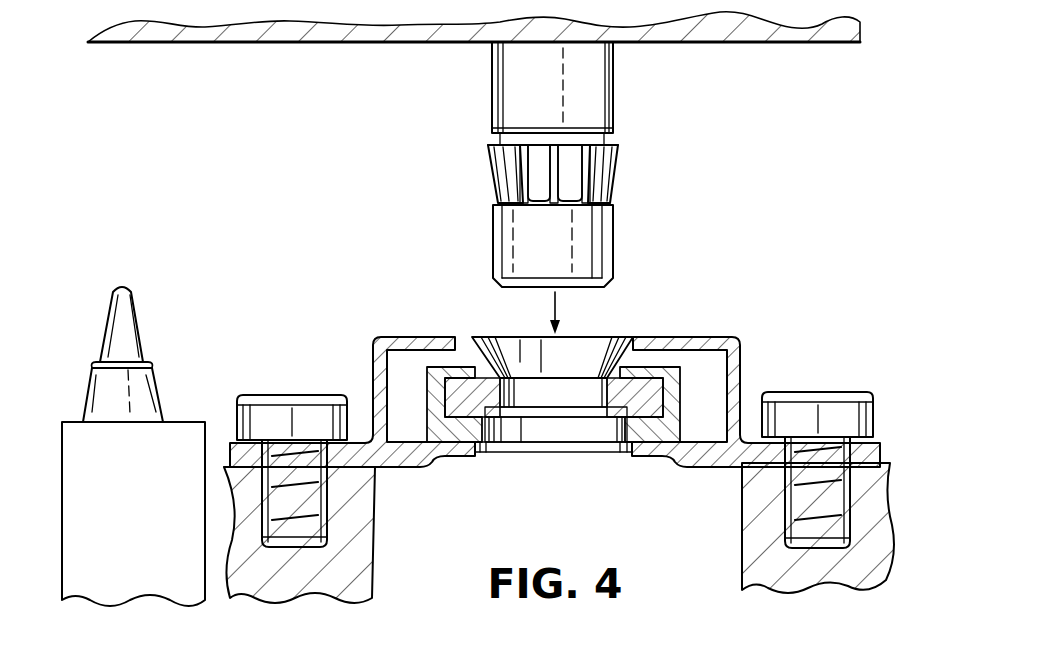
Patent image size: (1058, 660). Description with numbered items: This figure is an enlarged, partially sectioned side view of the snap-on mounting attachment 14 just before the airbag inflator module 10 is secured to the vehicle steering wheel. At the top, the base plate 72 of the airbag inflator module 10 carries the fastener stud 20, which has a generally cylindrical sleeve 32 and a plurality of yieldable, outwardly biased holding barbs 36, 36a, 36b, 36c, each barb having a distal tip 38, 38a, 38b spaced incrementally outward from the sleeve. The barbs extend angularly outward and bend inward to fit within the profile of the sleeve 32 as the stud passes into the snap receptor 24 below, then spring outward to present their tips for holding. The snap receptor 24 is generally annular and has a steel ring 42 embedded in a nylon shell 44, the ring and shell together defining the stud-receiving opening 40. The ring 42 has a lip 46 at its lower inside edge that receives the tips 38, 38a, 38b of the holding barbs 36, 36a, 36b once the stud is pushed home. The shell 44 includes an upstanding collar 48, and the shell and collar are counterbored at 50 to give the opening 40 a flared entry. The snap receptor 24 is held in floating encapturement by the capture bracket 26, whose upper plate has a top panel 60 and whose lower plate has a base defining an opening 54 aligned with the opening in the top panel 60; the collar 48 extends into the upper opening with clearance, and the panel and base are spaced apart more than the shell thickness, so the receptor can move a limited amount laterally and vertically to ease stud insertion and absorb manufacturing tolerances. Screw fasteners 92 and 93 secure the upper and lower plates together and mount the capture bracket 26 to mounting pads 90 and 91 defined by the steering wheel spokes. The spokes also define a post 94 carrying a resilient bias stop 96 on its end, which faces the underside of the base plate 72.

The airbag inflator module 10 is at (462, 69).
The base plate 72 is at (207, 33).
The fastener stud 20 is at (559, 122).
The cylindrical sleeve 32 is at (515, 80).
The holding barb 36 is at (498, 170).
The holding barb 36a is at (542, 183).
The holding barb 36b is at (562, 182).
The holding barb 36c is at (613, 157).
The distal tip 38 is at (498, 160).
The distal tip 38a is at (537, 150).
The distal tip 38b is at (567, 147).
The snap-on mounting attachment 14 is at (648, 252).
The capture bracket 26 is at (555, 373).
The snap receptor 24 is at (712, 395).
The stud-receiving opening 40 is at (542, 345).
The upstanding collar 48 is at (481, 347).
The counterbore 50 is at (523, 347).
The top panel 60 is at (461, 344).
The ring 42 is at (643, 401).
The shell 44 is at (433, 418).
The lip 46 is at (620, 408).
The opening 54 is at (485, 444).
The screw fastener 92 is at (274, 413).
The screw fastener 93 is at (872, 413).
The mounting pad 90 is at (356, 582).
The mounting pad 91 is at (769, 577).
The post 94 is at (75, 440).
The resilient bias stop 96 is at (113, 327).